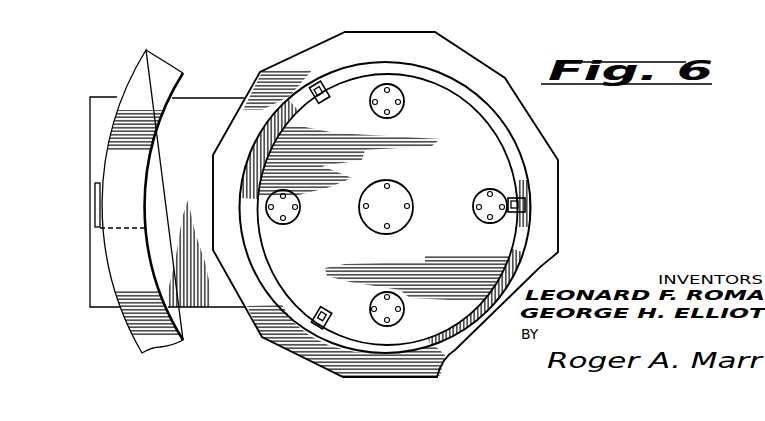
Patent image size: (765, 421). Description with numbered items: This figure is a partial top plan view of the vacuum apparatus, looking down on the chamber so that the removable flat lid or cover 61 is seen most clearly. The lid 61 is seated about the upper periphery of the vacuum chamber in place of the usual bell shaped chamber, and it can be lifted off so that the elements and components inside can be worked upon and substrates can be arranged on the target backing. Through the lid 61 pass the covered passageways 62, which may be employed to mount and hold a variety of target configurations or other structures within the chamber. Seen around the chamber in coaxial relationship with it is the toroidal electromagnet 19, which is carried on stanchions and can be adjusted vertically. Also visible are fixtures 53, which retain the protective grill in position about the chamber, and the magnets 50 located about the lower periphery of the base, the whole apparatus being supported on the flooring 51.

The toroidal electromagnet 19 is at (172, 63).
The flooring 51 is at (212, 103).
The fixtures 53 is at (317, 85).
The removable flat lid or cover 61 is at (342, 82).
The covered passageways 62 is at (392, 88).
The magnets 50 is at (483, 72).